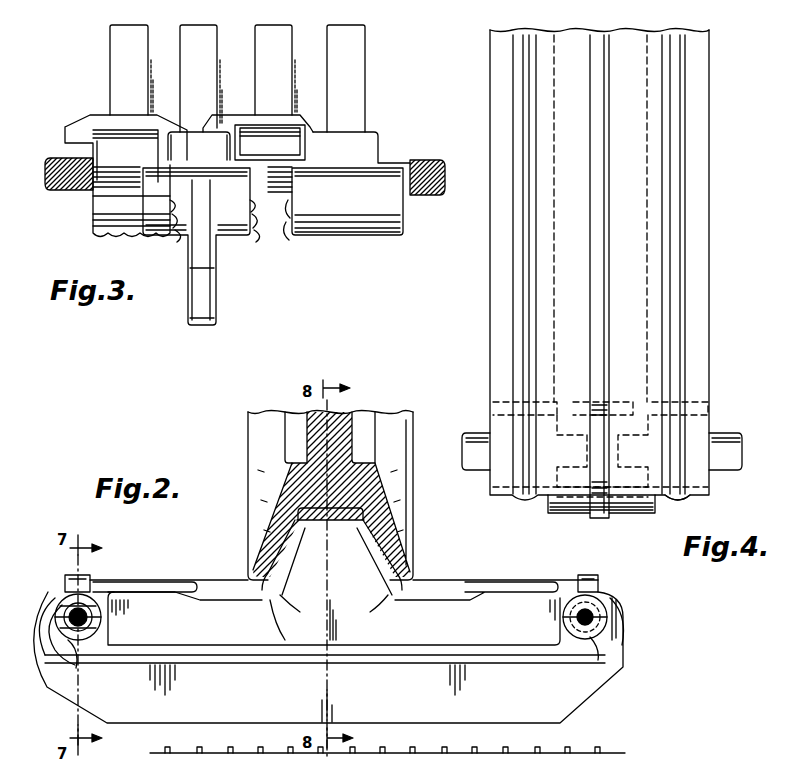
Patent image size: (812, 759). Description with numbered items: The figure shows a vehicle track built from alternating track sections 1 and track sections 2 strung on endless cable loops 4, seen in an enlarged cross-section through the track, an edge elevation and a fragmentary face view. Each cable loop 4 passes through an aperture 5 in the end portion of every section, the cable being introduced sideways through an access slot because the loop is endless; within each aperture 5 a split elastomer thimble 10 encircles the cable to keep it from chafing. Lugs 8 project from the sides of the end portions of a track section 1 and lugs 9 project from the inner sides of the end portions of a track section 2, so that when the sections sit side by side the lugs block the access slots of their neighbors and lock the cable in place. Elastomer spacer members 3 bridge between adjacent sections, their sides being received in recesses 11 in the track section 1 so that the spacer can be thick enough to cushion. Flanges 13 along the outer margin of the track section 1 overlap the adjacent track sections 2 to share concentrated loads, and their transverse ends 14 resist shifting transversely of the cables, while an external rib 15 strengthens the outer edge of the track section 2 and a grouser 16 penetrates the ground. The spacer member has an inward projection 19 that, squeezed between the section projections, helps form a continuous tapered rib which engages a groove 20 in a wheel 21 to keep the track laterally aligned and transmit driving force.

In FIG. 3, the track section 1 is at (244, 240).
In FIG. 4, the track section 1 is at (585, 512).
In FIG. 2, the track section 1 is at (510, 582).
In FIG. 3, the track section 2 is at (110, 228).
In FIG. 4, the track section 2 is at (495, 312).
In FIG. 2, the track section 2 is at (660, 758).
In FIG. 3, the spacer member 3 is at (160, 36).
In FIG. 2, the spacer member 3 is at (367, 623).
In FIG. 3, the cable loop 4 is at (432, 160).
In FIG. 2, the cable loop 4 is at (75, 612).
In FIG. 2, the aperture 5 is at (58, 642).
In FIG. 3, the lug 8 is at (398, 160).
In FIG. 2, the lug 8 is at (52, 605).
In FIG. 3, the lug 9 is at (78, 116).
In FIG. 4, the lug 9 is at (474, 470).
In FIG. 2, the lug 9 is at (82, 577).
In FIG. 3, the thimble 10 is at (85, 180).
In FIG. 2, the thimble 10 is at (92, 625).
In FIG. 2, the recess 11 is at (214, 640).
In FIG. 2, the flange 13 is at (244, 665).
In FIG. 2, the flange end 14 is at (73, 655).
In FIG. 4, the external rib 15 is at (686, 498).
In FIG. 3, the grouser 16 is at (210, 294).
In FIG. 4, the grouser 16 is at (603, 292).
In FIG. 2, the grouser 16 is at (392, 698).
In FIG. 2, the inward projection 19 is at (338, 563).
In FIG. 2, the groove 20 is at (365, 514).
In FIG. 2, the wheel 21 is at (395, 428).